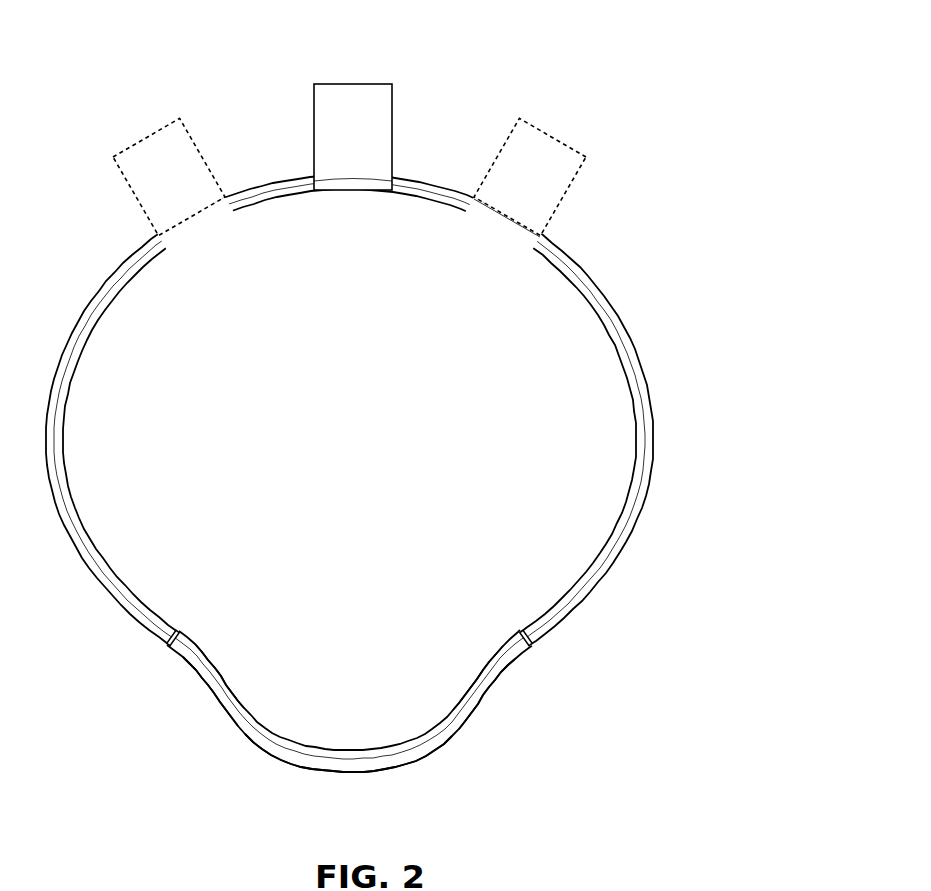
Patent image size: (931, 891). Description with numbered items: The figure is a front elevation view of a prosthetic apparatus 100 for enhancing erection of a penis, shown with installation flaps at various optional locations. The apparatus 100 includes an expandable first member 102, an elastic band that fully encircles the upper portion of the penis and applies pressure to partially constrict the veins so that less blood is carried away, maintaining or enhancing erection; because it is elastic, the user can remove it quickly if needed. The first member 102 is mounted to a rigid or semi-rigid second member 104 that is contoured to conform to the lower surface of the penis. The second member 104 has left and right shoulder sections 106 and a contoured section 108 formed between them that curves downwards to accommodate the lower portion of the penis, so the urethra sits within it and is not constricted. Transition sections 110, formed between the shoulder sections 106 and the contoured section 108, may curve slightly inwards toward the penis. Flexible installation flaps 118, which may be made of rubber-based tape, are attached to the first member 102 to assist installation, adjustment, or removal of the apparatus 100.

The prosthetic apparatus 100 is at (436, 431).
The expandable first member 102 is at (656, 399).
The second member 104 is at (455, 760).
The shoulder sections 106 is at (222, 676).
The contoured section 108 is at (267, 754).
The transition sections 110 is at (207, 693).
The flexible installation flaps 118 is at (357, 103).